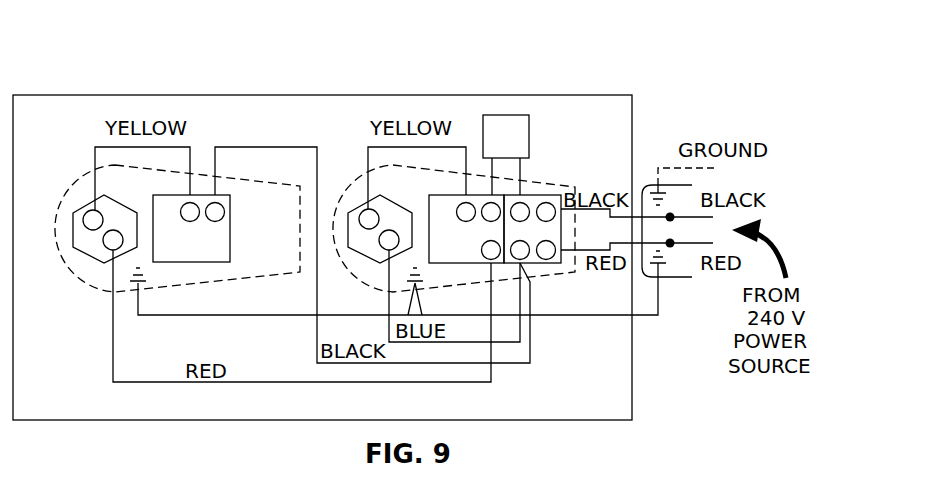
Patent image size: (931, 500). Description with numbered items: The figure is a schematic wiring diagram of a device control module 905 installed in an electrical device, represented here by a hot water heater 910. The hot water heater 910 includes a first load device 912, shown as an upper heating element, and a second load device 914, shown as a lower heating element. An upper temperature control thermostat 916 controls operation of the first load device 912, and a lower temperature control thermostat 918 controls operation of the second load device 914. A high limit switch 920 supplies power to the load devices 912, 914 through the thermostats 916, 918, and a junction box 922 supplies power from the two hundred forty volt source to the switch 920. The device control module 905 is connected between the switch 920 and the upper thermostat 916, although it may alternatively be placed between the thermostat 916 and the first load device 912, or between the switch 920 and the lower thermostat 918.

The device control module 905 is at (497, 106).
The hot water heater 910 is at (607, 92).
The first load device 912 is at (360, 205).
The second load device 914 is at (82, 206).
The upper temperature control thermostat 916 is at (448, 195).
The lower temperature control thermostat 918 is at (172, 195).
The high limit switch 920 is at (540, 195).
The junction box 922 is at (648, 184).